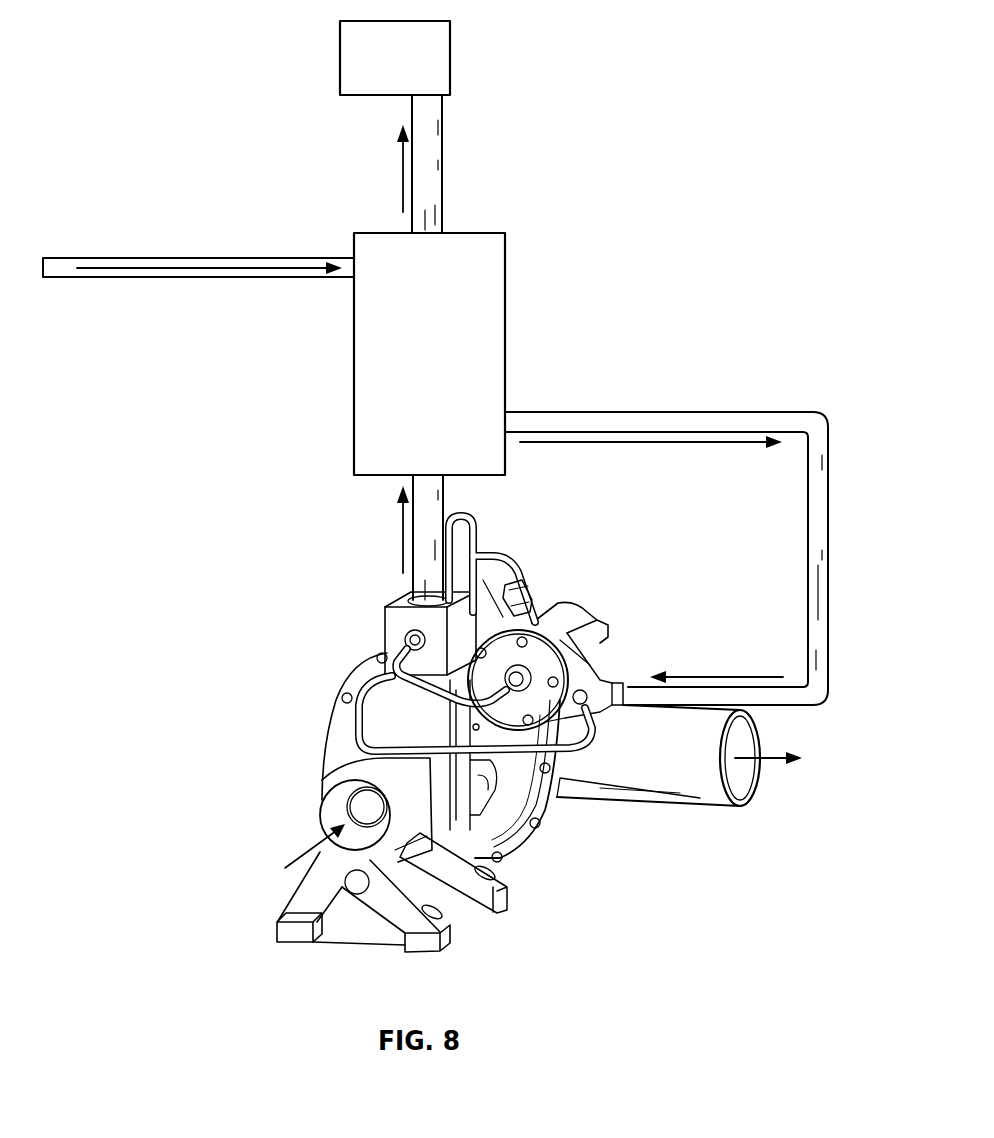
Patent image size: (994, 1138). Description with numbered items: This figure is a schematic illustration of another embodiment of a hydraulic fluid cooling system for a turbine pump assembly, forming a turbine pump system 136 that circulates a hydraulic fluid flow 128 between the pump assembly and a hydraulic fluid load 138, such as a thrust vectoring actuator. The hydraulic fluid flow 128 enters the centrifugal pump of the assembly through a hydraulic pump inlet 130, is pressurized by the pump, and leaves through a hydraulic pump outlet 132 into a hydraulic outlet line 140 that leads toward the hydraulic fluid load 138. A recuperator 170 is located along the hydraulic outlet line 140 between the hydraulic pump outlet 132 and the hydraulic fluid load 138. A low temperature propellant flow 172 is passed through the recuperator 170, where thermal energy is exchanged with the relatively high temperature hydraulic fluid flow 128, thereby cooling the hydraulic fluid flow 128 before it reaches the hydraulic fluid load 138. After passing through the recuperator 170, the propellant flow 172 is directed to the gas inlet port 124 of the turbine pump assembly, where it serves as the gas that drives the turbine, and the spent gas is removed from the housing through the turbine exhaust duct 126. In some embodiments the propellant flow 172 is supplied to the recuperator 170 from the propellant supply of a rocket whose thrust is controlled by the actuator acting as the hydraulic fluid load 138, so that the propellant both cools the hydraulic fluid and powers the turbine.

The gas inlet port 124 is at (620, 724).
The turbine exhaust duct 126 is at (740, 773).
The hydraulic fluid flow 128 is at (412, 165).
The hydraulic pump inlet 130 is at (334, 812).
The hydraulic pump outlet 132 is at (406, 598).
The turbine pump system 136 is at (333, 957).
The hydraulic fluid load 138 is at (340, 57).
The hydraulic outlet line 140 is at (413, 530).
The recuperator 170 is at (374, 352).
The propellant flow 172 is at (116, 258).